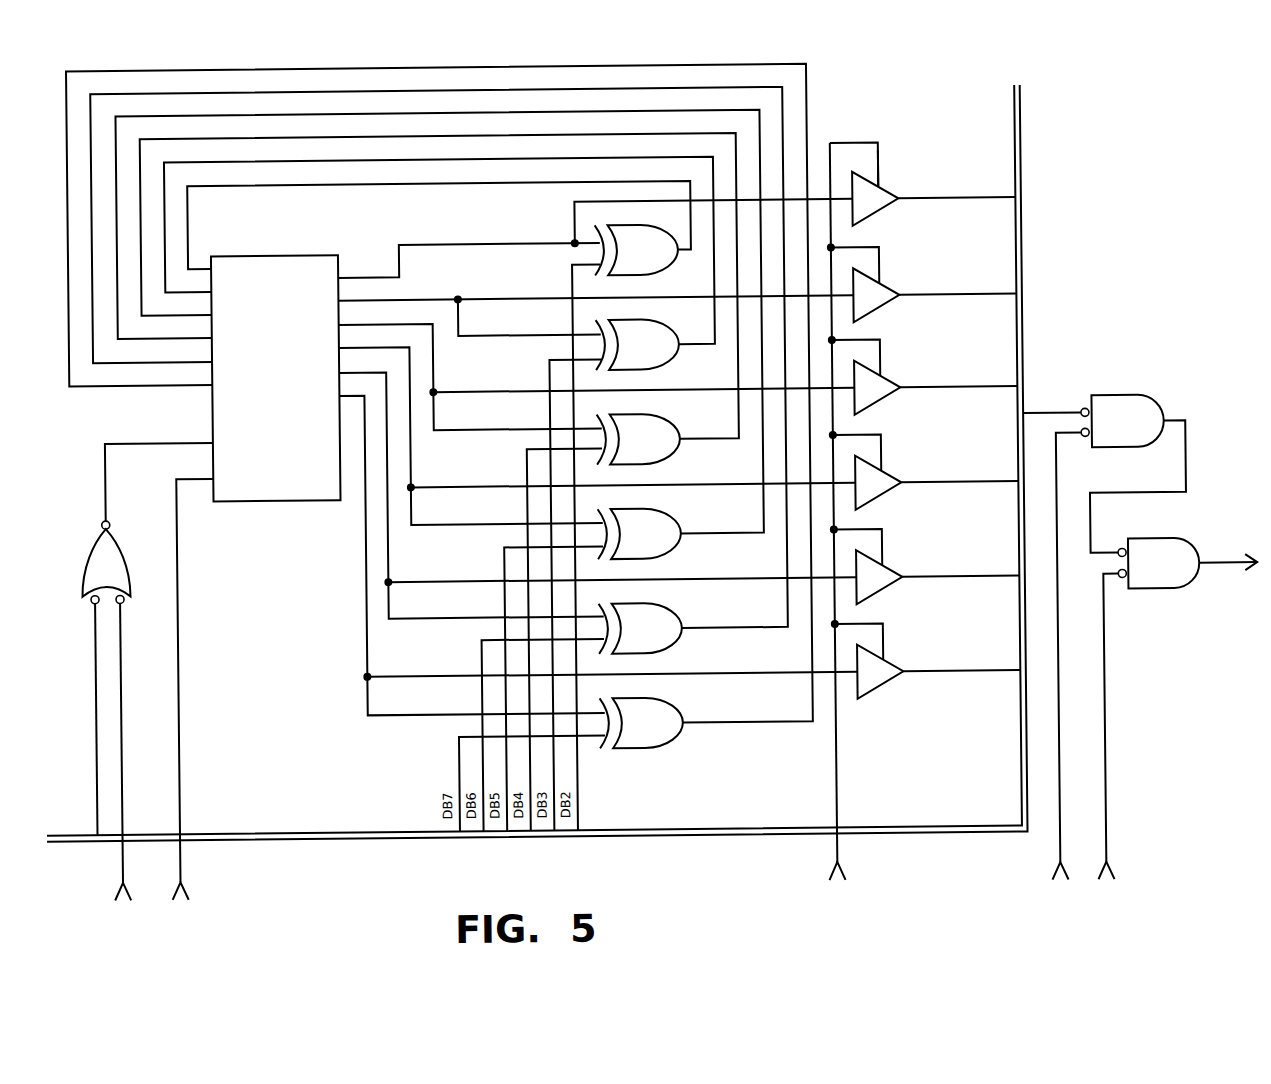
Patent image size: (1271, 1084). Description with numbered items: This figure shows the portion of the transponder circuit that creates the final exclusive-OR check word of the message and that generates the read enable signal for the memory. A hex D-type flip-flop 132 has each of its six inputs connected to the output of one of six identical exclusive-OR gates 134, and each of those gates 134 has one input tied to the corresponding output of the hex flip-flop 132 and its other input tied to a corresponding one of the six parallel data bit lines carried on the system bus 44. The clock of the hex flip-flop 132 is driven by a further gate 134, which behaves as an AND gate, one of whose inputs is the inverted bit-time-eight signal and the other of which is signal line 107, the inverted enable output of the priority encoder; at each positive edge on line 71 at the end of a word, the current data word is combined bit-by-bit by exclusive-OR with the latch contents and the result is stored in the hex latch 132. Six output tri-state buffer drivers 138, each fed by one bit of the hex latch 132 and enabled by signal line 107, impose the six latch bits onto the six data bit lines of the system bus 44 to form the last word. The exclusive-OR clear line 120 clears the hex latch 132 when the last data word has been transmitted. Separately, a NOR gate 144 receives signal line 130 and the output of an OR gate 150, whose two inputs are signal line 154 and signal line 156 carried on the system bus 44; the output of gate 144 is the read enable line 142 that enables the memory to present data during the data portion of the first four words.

The hex D-type flip-flop 132 is at (275, 469).
The exclusive-OR gate 134 is at (627, 264).
The output tri-state buffer driver 138 is at (889, 188).
The OR gate 150 is at (1138, 440).
The NOR gate 144 is at (1143, 580).
The read enable line 142 is at (1218, 576).
The signal line 156 is at (1038, 406).
The signal line 154 is at (1062, 718).
The signal line 130 is at (1108, 792).
The line 71 is at (88, 691).
The signal line 107 is at (106, 854).
The exclusive-OR clear line 120 is at (183, 858).
The system bus 44 is at (334, 840).